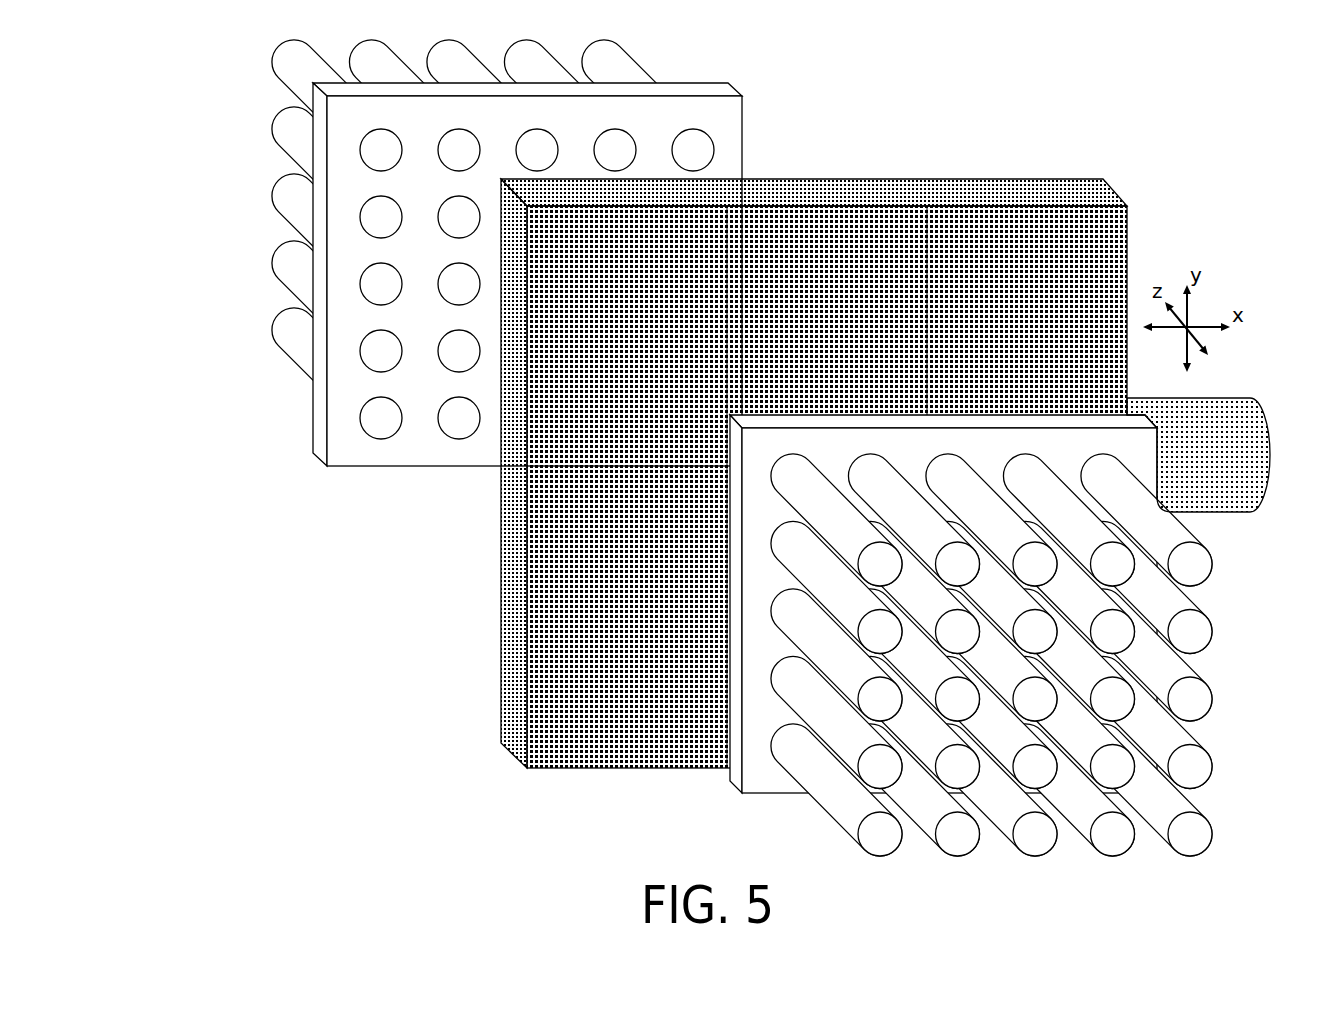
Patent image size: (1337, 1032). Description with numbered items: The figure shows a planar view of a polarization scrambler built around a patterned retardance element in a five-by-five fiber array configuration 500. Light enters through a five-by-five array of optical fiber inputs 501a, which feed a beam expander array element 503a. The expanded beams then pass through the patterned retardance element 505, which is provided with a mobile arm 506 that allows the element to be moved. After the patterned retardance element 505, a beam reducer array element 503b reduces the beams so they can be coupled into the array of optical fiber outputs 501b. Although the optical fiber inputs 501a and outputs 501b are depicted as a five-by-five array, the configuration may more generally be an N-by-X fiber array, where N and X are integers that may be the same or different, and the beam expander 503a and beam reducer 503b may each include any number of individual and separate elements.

The 5×5 fiber array configuration 500 is at (992, 86).
The array of optical fiber inputs 501a is at (244, 182).
The beam expander array element 503a is at (740, 88).
The patterned retardance element (PRE) 505 is at (498, 663).
The beam reducer array element 503b is at (747, 793).
The array of optical fiber outputs 501b is at (1228, 668).
The mobile arm 506 is at (1263, 410).